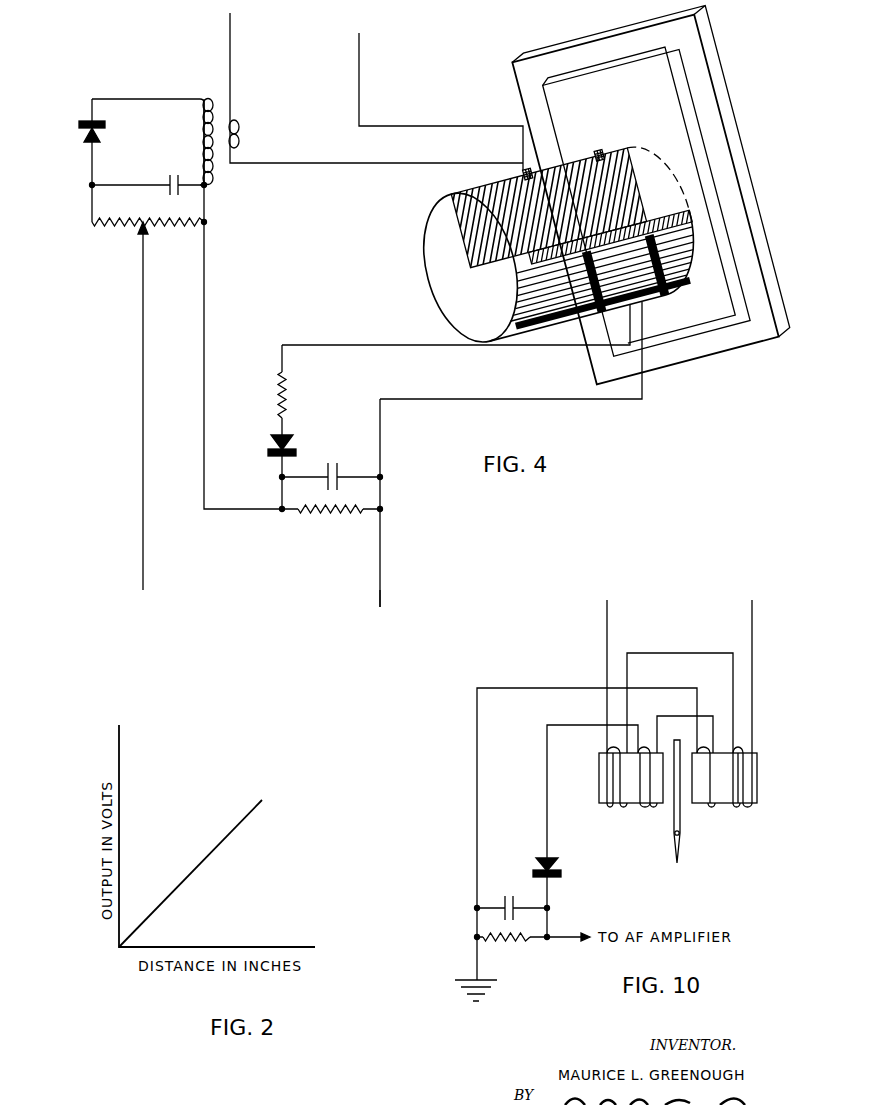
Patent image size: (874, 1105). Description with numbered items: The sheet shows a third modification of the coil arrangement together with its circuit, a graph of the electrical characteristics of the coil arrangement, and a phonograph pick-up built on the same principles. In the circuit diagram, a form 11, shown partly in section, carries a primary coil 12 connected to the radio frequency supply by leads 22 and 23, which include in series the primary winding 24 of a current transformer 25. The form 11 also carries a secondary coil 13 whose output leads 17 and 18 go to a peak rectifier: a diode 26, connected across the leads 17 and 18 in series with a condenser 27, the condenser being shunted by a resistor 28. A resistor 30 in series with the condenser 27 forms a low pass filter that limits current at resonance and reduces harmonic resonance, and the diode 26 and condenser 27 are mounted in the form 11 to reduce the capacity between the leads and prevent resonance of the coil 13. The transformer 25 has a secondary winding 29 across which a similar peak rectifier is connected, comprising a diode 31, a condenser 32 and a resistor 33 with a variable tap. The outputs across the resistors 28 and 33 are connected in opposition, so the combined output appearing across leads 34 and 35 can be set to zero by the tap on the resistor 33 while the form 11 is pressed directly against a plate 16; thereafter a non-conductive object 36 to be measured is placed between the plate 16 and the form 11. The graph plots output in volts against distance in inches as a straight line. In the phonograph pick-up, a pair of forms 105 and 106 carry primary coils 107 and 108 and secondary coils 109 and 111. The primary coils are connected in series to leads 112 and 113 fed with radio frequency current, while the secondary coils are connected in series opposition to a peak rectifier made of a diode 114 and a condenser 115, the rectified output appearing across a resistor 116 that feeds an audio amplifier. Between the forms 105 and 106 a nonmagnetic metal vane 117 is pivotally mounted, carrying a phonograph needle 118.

In FIG. 4, the form 11 is at (430, 258).
In FIG. 4, the primary coil 12 is at (526, 170).
In FIG. 4, the secondary coil 13 is at (600, 150).
In FIG. 4, the plate 16 is at (668, 360).
In FIG. 4, the output lead 17 is at (415, 344).
In FIG. 4, the output lead 18 is at (432, 398).
In FIG. 4, the lead 22 is at (230, 42).
In FIG. 4, the lead 23 is at (359, 43).
In FIG. 4, the primary winding 24 is at (240, 131).
In FIG. 4, the current transformer 25 is at (204, 94).
In FIG. 4, the diode 26 is at (278, 436).
In FIG. 4, the condenser 27 is at (340, 470).
In FIG. 4, the resistor 28 is at (330, 512).
In FIG. 4, the secondary winding 29 is at (204, 138).
In FIG. 4, the resistor 30 is at (290, 392).
In FIG. 4, the diode 31 is at (88, 138).
In FIG. 4, the condenser 32 is at (170, 178).
In FIG. 4, the resistor 33 is at (100, 226).
In FIG. 4, the lead 34 is at (140, 524).
In FIG. 4, the lead 35 is at (378, 593).
In FIG. 4, the non-conductive object 36 is at (726, 325).
In FIG. 10, the form 105 is at (622, 806).
In FIG. 10, the form 106 is at (736, 802).
In FIG. 10, the primary coil 107 is at (617, 799).
In FIG. 10, the primary coil 108 is at (752, 806).
In FIG. 10, the secondary coil 109 is at (655, 806).
In FIG. 10, the secondary coil 111 is at (705, 806).
In FIG. 10, the lead 112 is at (607, 615).
In FIG. 10, the lead 113 is at (752, 615).
In FIG. 10, the diode 114 is at (557, 864).
In FIG. 10, the condenser 115 is at (505, 895).
In FIG. 10, the resistor 116 is at (520, 942).
In FIG. 10, the nonmagnetic metal vane 117 is at (683, 860).
In FIG. 10, the phonograph needle 118 is at (672, 860).